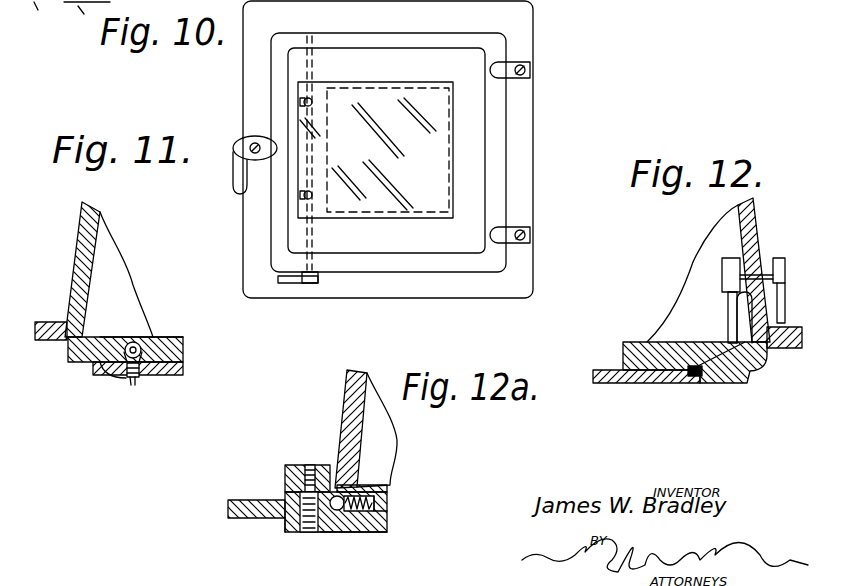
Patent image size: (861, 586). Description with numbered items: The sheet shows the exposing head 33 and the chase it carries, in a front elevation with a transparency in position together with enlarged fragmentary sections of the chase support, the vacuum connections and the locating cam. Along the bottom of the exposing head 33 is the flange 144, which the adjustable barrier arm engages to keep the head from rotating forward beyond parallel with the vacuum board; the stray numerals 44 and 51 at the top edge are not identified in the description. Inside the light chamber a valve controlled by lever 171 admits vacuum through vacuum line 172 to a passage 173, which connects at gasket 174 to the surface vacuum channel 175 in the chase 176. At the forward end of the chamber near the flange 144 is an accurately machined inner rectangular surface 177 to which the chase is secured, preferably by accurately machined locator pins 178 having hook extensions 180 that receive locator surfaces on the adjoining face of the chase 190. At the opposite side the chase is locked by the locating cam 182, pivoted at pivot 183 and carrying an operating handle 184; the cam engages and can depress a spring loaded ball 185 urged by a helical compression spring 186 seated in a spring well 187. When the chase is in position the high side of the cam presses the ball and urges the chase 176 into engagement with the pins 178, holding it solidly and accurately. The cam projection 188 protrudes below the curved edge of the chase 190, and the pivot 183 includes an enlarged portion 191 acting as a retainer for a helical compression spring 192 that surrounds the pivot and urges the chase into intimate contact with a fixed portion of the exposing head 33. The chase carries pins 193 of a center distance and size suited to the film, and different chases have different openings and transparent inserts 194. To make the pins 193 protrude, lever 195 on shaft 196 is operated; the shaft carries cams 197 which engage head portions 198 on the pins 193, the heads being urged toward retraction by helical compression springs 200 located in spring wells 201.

In FIG. 11, the exposing head 33 is at (83, 230).
In FIG. 12, the exposing head 33 is at (756, 220).
In FIG. 12A, the exposing head 33 is at (348, 382).
In FIG. 10, the frame member 44 is at (87, 14).
In FIG. 10, the frame member 51 is at (49, 16).
In FIG. 10, the flange 144 is at (388, 285).
In FIG. 11, the flange 144 is at (45, 321).
In FIG. 12A, the flange 144 is at (290, 465).
In FIG. 12, the lever 171 is at (806, 245).
In FIG. 12, the vacuum line 172 is at (728, 308).
In FIG. 12, the passage 173 is at (722, 356).
In FIG. 12, the gasket 174 is at (708, 376).
In FIG. 12, the surface vacuum channel 175 is at (692, 378).
In FIG. 12, the chase 176 is at (628, 384).
In FIG. 11, the inner rectangular surface 177 is at (88, 330).
In FIG. 12, the inner rectangular surface 177 is at (783, 349).
In FIG. 10, the locator pins 178 is at (531, 70).
In FIG. 10, the hook extensions 180 is at (503, 235).
In FIG. 10, the locating cam 182 is at (250, 142).
In FIG. 12A, the locating cam 182 is at (312, 466).
In FIG. 10, the pivot 183 is at (248, 146).
In FIG. 12A, the pivot 183 is at (307, 533).
In FIG. 10, the operating handle 184 is at (236, 172).
In FIG. 12A, the operating handle 184 is at (255, 500).
In FIG. 12A, the spring loaded ball 185 is at (360, 485).
In FIG. 12A, the helical compression spring 186 is at (352, 500).
In FIG. 12A, the spring well 187 is at (376, 505).
In FIG. 12A, the cam projection 188 is at (360, 533).
In FIG. 12A, the chase 190 is at (385, 520).
In FIG. 12A, the enlarged portion 191 is at (295, 532).
In FIG. 12A, the helical compression spring 192 is at (330, 533).
In FIG. 10, the pins 193 is at (313, 193).
In FIG. 11, the pins 193 is at (133, 380).
In FIG. 10, the transparent inserts 194 is at (430, 196).
In FIG. 10, the lever 195 is at (306, 284).
In FIG. 10, the shaft 196 is at (308, 30).
In FIG. 11, the shaft 196 is at (136, 344).
In FIG. 10, the cams 197 is at (313, 98).
In FIG. 11, the cams 197 is at (150, 336).
In FIG. 11, the head portions 198 is at (150, 370).
In FIG. 11, the helical compression springs 200 is at (126, 372).
In FIG. 11, the spring wells 201 is at (100, 368).